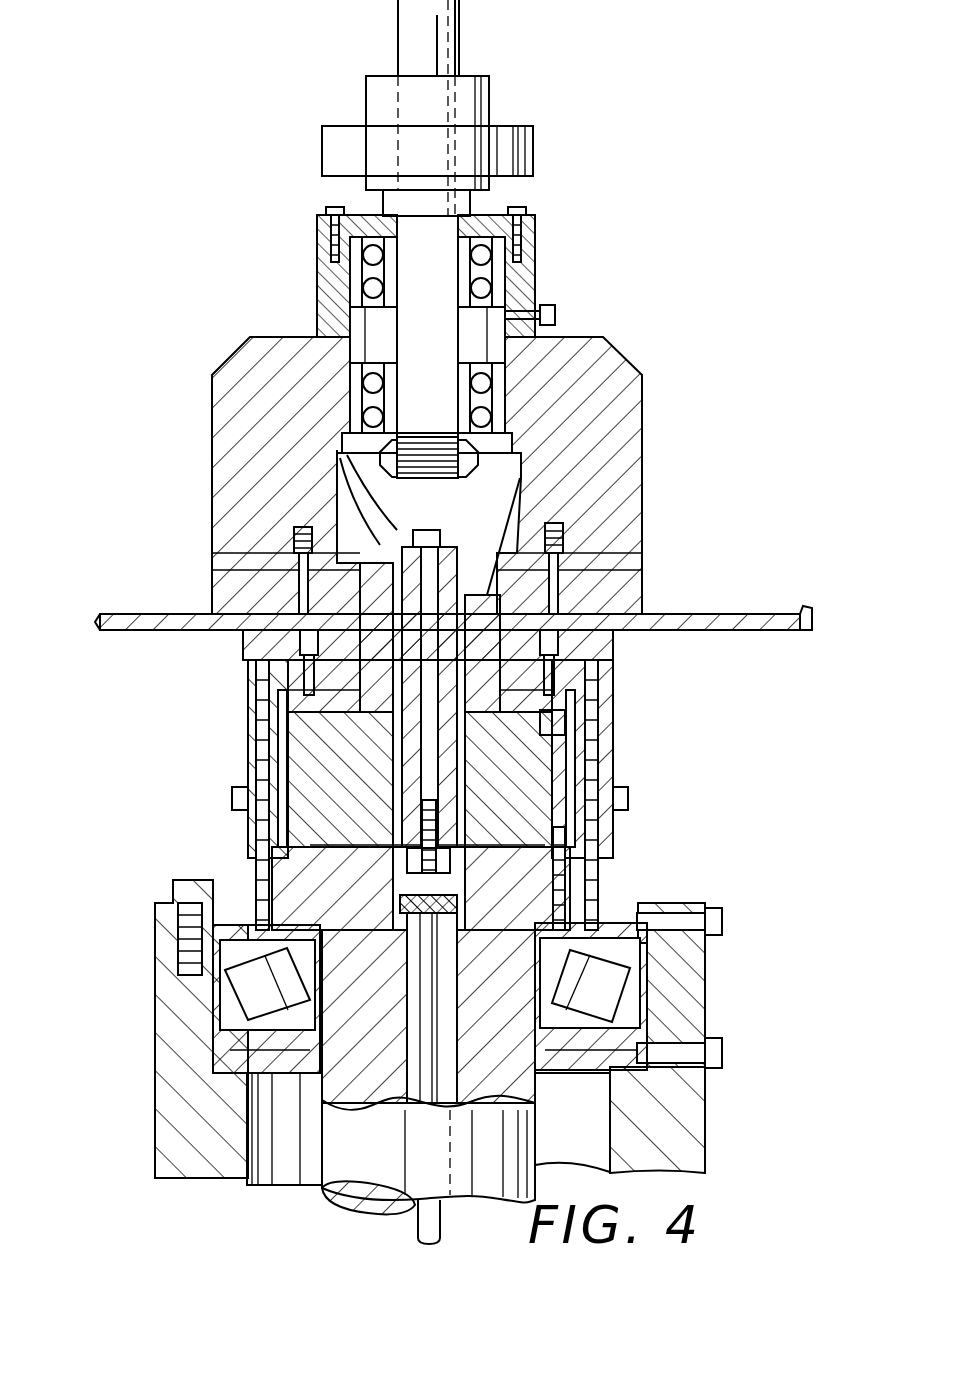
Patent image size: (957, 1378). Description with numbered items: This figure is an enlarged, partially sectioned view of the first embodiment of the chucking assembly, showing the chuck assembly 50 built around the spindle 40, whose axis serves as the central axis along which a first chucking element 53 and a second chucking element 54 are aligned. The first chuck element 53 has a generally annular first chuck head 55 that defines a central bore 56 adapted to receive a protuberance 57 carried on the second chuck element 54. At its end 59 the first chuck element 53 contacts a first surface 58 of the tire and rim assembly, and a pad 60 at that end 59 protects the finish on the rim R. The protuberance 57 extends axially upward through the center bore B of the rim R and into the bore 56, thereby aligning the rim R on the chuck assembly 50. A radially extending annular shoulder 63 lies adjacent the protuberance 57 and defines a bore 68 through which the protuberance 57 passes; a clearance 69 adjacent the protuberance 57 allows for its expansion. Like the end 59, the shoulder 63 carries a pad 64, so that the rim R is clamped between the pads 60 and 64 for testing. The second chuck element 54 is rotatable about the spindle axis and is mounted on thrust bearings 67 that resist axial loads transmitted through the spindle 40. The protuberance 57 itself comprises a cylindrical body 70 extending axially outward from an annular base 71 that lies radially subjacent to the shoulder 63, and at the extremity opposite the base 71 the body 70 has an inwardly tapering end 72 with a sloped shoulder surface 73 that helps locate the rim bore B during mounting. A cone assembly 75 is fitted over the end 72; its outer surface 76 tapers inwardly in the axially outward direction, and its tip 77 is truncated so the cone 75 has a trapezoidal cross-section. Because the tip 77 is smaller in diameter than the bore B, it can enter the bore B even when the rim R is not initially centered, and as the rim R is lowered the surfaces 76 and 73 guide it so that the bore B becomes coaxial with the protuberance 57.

The spindle 40 is at (330, 1153).
The chuck assembly 50 is at (245, 148).
The first chucking element 53 is at (237, 525).
The second chucking element 54 is at (305, 800).
The first chuck head 55 is at (630, 538).
The central bore 56 is at (493, 517).
The protuberance 57 is at (347, 602).
The first surface 58 is at (772, 612).
The end 59 is at (633, 633).
The pad 60 is at (640, 603).
The shoulder 63 is at (250, 643).
The pad 64 is at (282, 648).
The thrust bearings 67 is at (257, 985).
The bore 68 is at (370, 668).
The clearance 69 is at (555, 738).
The cylindrical body 70 is at (372, 560).
The annular base 71 is at (558, 698).
The inwardly tapering end 72 is at (378, 590).
The sloped shoulder surface 73 is at (355, 585).
The cone assembly 75 is at (460, 530).
The outer surface 76 is at (360, 572).
The tip 77 is at (413, 527).
The center bore B is at (600, 590).
The rim R is at (775, 630).